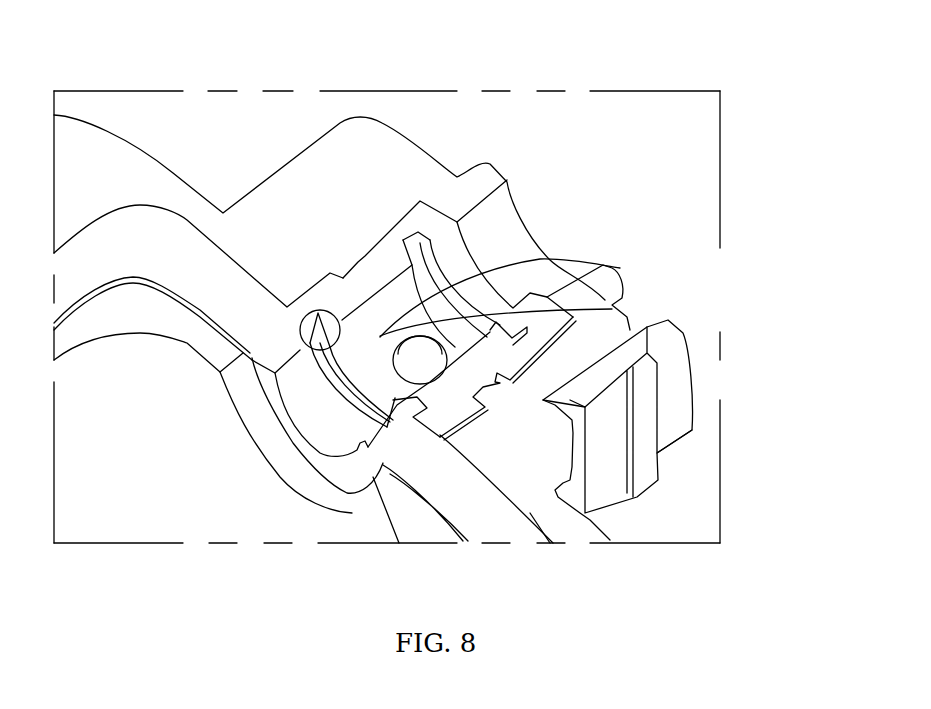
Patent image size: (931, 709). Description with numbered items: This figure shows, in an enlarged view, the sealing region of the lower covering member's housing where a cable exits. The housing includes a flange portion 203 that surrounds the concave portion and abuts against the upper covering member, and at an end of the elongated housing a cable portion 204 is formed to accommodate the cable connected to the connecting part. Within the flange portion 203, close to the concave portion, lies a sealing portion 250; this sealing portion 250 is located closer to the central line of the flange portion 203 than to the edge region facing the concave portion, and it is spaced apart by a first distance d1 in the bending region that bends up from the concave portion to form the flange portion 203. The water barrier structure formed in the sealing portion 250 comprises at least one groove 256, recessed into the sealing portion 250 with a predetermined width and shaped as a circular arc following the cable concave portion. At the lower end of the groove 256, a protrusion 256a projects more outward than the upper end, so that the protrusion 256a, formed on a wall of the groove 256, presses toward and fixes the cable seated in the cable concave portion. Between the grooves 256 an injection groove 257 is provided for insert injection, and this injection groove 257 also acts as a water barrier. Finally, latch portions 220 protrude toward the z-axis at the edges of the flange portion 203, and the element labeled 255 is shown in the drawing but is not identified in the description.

The flange portion 203 is at (97, 153).
The cable portion 204 is at (375, 153).
The sealing portion 250 is at (143, 233).
The first distance d1 is at (238, 308).
The bracket clip 255 is at (423, 205).
The groove 256 is at (620, 268).
The protrusion 256a is at (312, 312).
The injection groove 257 is at (432, 358).
The latch portion 220 is at (677, 393).